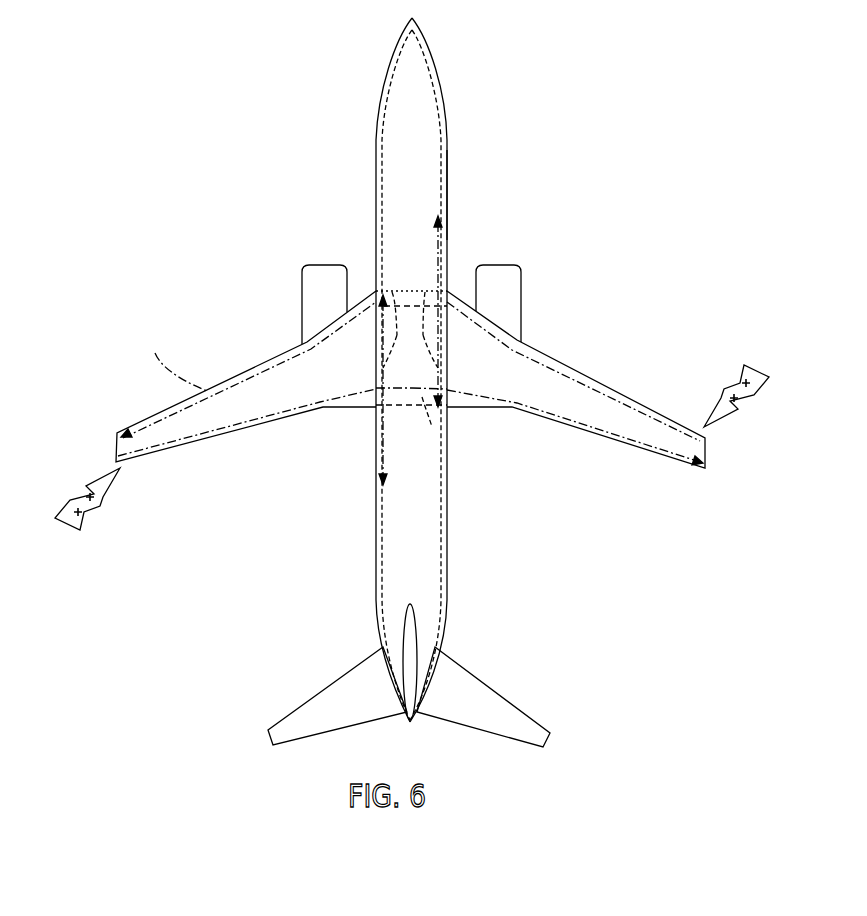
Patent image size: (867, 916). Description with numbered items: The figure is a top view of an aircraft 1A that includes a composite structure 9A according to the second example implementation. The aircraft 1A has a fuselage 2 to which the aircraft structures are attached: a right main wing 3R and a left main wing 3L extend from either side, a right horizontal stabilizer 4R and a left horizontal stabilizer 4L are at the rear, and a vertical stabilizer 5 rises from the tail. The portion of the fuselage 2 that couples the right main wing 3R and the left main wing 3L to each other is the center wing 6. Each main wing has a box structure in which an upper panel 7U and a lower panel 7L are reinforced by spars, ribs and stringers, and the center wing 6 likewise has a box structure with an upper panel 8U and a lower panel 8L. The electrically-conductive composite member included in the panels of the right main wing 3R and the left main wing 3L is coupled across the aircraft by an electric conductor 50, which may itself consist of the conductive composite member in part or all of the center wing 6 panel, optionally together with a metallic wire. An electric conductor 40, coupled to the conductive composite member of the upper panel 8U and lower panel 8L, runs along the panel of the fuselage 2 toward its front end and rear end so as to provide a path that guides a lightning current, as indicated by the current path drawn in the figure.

The aircraft 1A is at (197, 86).
The fuselage 2 is at (377, 203).
The electric conductor 40 is at (449, 114).
The composite structure 9A is at (448, 193).
The center wing 6 is at (425, 289).
The left main wing 3L is at (263, 362).
The right main wing 3R is at (588, 378).
The upper panel 7U is at (295, 410).
The lower panel 7L is at (250, 430).
The upper panel 8U is at (356, 393).
The lower panel 8L is at (473, 404).
The electric conductor 50 is at (393, 291).
The vertical stabilizer 5 is at (410, 633).
The left horizontal stabilizer 4L is at (323, 688).
The right horizontal stabilizer 4R is at (498, 690).